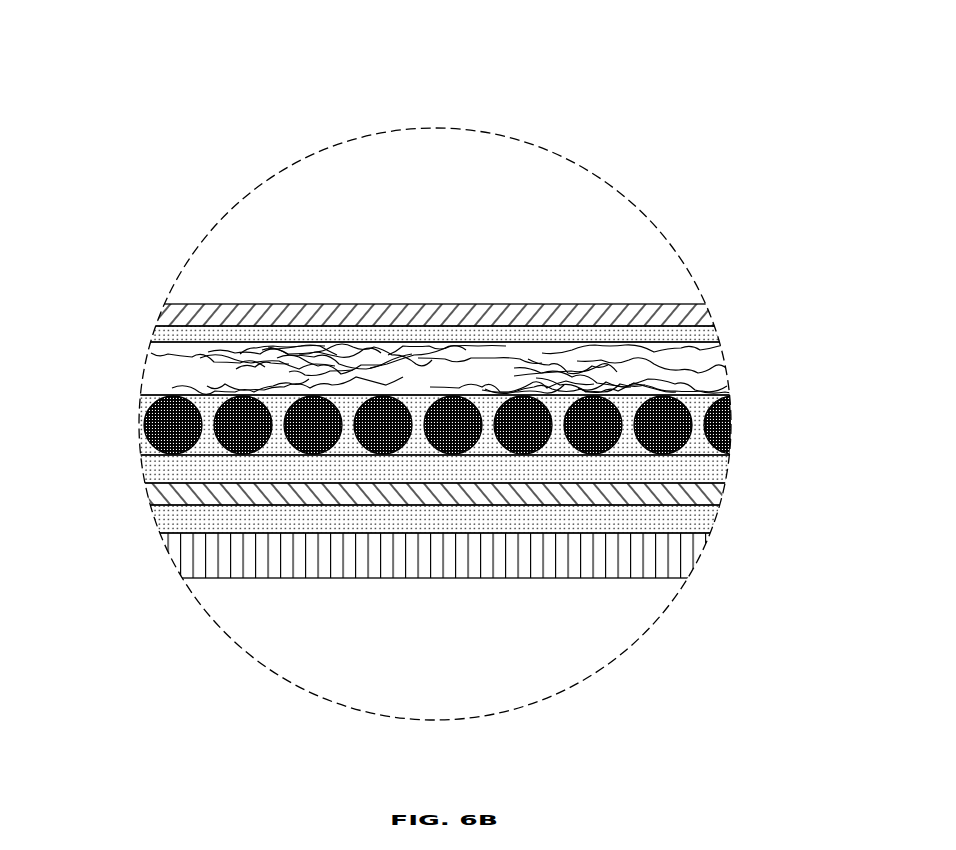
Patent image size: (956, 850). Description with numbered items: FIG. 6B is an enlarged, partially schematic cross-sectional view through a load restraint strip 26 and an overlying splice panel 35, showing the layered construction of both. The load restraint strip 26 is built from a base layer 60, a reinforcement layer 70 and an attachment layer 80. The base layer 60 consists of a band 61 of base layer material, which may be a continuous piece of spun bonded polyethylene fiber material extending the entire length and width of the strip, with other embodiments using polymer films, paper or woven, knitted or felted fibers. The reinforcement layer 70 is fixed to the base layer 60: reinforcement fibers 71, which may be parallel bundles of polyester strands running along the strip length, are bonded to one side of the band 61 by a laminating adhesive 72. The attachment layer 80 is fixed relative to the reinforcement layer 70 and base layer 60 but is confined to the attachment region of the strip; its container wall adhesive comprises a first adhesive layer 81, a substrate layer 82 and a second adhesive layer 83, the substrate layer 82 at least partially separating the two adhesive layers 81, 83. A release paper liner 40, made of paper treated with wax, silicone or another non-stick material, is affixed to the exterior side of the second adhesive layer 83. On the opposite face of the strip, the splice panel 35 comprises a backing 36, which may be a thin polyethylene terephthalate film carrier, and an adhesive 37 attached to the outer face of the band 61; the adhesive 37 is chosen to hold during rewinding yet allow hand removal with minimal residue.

The load restraint strip 26 is at (431, 459).
The splice panel 35 is at (450, 312).
The backing 36 is at (541, 304).
The adhesive 37 is at (715, 333).
The release paper liner 40 is at (530, 580).
The base layer 60 is at (450, 368).
The band 61 is at (713, 348).
The reinforcement layer 70 is at (456, 430).
The reinforcement fibers 71 is at (661, 458).
The laminating adhesive 72 is at (722, 394).
The attachment layer 80 is at (451, 516).
The first adhesive layer 81 is at (727, 483).
The substrate layer 82 is at (727, 497).
The second adhesive layer 83 is at (715, 525).